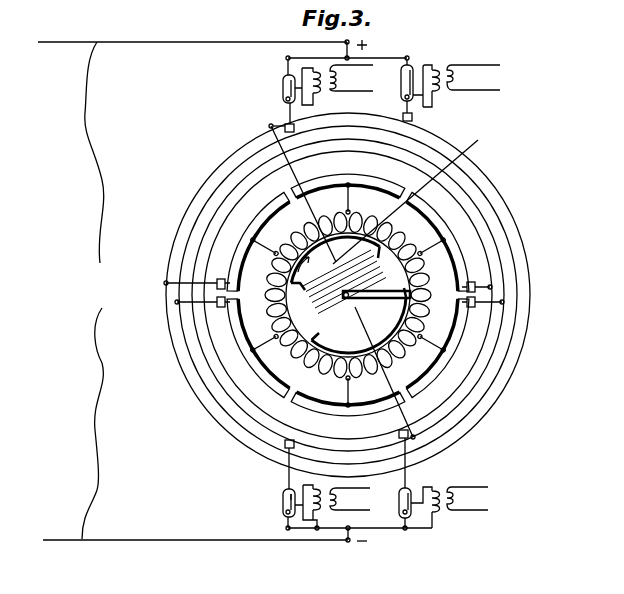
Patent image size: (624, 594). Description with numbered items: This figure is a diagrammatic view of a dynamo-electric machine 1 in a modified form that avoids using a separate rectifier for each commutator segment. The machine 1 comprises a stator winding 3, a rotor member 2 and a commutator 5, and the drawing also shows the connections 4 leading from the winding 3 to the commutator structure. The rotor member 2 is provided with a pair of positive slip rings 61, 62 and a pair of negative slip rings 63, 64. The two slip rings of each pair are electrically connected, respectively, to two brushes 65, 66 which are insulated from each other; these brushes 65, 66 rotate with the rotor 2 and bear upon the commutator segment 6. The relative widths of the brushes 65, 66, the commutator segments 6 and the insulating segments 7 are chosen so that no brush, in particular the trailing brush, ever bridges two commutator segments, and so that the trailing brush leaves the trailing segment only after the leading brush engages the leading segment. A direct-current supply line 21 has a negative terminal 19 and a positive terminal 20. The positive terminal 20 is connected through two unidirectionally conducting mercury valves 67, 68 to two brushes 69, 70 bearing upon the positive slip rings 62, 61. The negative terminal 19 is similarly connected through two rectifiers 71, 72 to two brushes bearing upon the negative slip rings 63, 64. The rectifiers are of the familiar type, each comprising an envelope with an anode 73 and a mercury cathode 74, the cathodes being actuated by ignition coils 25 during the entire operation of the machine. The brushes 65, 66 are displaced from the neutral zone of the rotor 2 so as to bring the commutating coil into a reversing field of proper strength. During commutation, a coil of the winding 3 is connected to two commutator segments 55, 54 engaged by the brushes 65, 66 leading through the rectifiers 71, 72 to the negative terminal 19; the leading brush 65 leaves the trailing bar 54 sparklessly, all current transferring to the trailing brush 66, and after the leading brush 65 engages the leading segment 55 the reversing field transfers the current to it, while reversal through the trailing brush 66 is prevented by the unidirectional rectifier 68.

The dynamo-electric machine 1 is at (362, 286).
The rotor member 2 is at (387, 332).
The stator winding 3 is at (402, 232).
The winding taps 4 is at (421, 254).
The commutator 5 is at (459, 254).
The commutator segment 6 is at (364, 176).
The insulating segment 7 is at (494, 142).
The negative terminal 19 is at (347, 541).
The positive terminal 20 is at (360, 42).
The direct-current supply line 21 is at (110, 299).
The ignition coil 25 is at (322, 84).
The commutator segment 54 is at (466, 284).
The commutator segment 55 is at (466, 302).
The positive slip ring 61 is at (227, 153).
The positive slip ring 62 is at (210, 187).
The negative slip ring 63 is at (198, 350).
The negative slip ring 64 is at (220, 358).
The brush 65 is at (225, 272).
The brush 66 is at (221, 308).
The mercury valve 67 is at (283, 85).
The mercury valve 68 is at (418, 67).
The brush 69 is at (270, 125).
The brush 70 is at (412, 117).
The rectifier 71 is at (283, 503).
The rectifier 72 is at (410, 508).
The anode 73 is at (285, 491).
The mercury cathode 74 is at (286, 518).